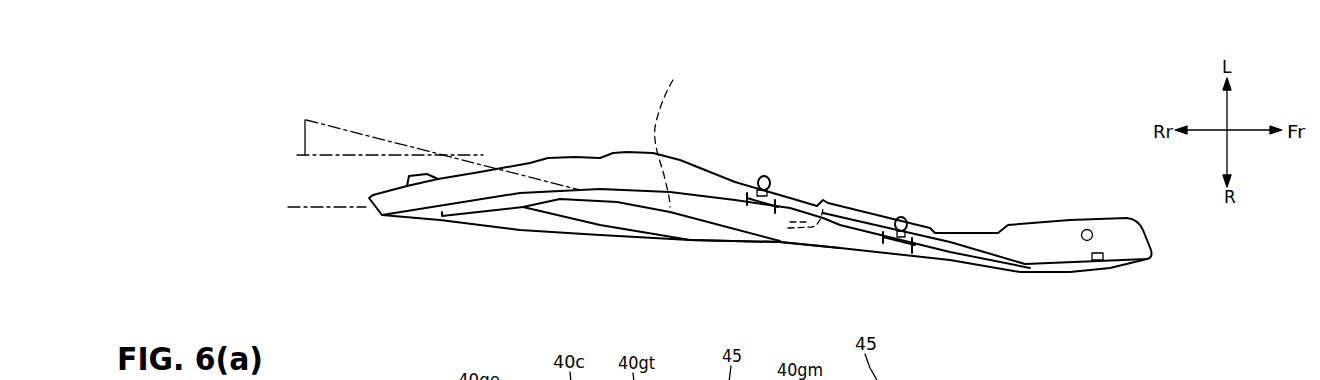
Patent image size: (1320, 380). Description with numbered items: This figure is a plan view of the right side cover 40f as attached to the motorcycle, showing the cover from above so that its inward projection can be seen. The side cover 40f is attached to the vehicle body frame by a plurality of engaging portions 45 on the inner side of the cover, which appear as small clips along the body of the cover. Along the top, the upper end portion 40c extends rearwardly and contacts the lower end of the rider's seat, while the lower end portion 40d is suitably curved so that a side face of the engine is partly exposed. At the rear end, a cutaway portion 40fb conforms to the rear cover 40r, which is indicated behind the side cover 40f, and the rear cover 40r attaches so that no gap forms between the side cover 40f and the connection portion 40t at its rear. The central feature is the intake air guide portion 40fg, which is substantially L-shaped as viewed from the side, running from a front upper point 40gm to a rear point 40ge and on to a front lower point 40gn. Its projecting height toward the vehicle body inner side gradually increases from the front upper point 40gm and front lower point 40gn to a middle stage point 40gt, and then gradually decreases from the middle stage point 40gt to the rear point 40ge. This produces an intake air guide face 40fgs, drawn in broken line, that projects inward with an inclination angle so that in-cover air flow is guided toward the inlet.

The connection portion 40t is at (366, 212).
The upper end portion 40c is at (548, 158).
The side cover 40f is at (583, 140).
The cutaway portion 40fb is at (408, 176).
The intake air guide face 40fgs is at (676, 134).
The rear cover 40r is at (318, 207).
The rear point 40ge is at (448, 217).
The front lower point 40gn is at (685, 240).
The middle stage point 40gt is at (617, 200).
The intake air guide portion 40fg is at (628, 220).
The front upper point 40gm is at (780, 241).
The lower end portion 40d is at (853, 207).
The engaging portion 45 is at (768, 177).